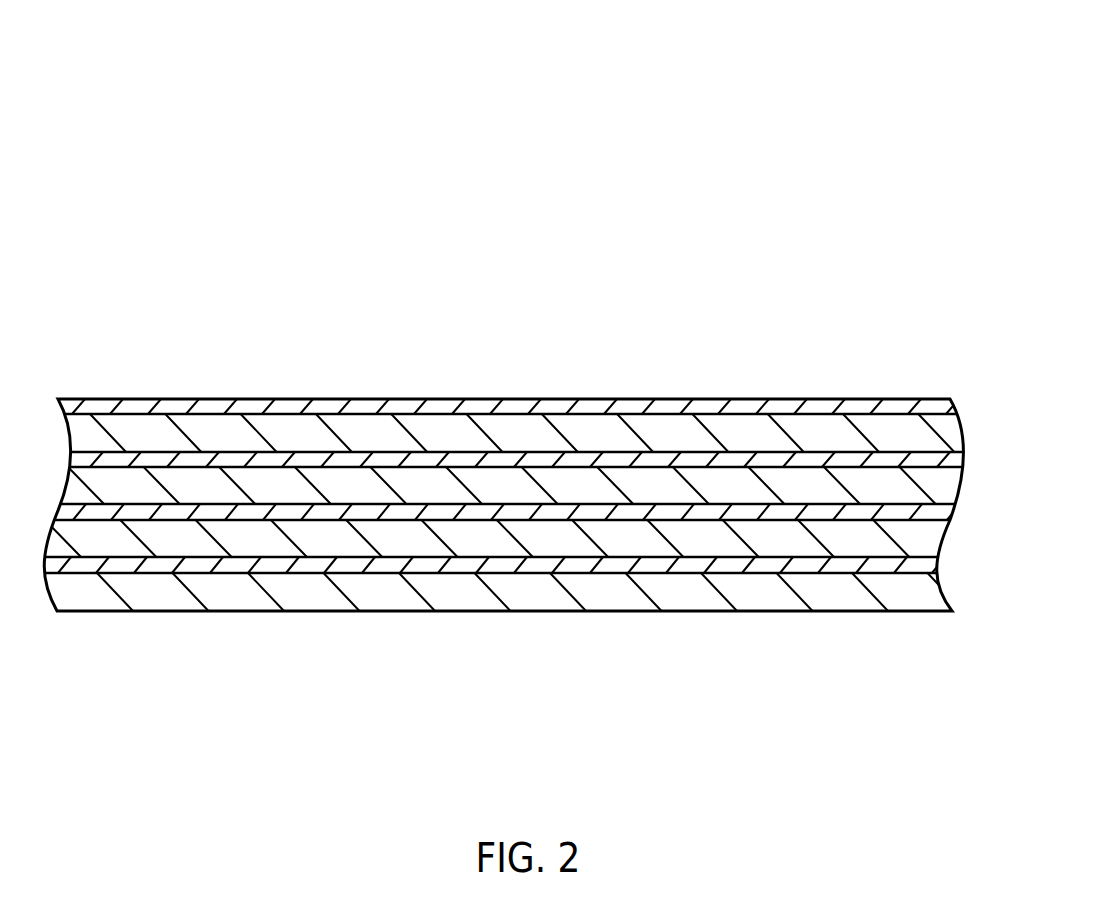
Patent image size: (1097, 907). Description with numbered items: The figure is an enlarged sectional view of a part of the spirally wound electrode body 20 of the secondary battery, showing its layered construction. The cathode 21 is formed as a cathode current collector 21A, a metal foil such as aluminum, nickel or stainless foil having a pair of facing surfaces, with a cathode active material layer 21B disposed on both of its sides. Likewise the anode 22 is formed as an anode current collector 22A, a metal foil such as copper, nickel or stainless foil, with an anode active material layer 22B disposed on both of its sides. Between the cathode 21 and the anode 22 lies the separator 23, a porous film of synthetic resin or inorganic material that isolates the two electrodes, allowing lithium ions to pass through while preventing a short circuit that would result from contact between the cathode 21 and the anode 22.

The spirally wound electrode body 20 is at (862, 168).
The cathode 21 is at (386, 291).
The cathode current collector 21A is at (122, 462).
The cathode active material layer 21B is at (352, 428).
The anode 22 is at (498, 292).
The anode current collector 22A is at (537, 566).
The anode active material layer 22B is at (782, 537).
The separator 23 is at (930, 412).